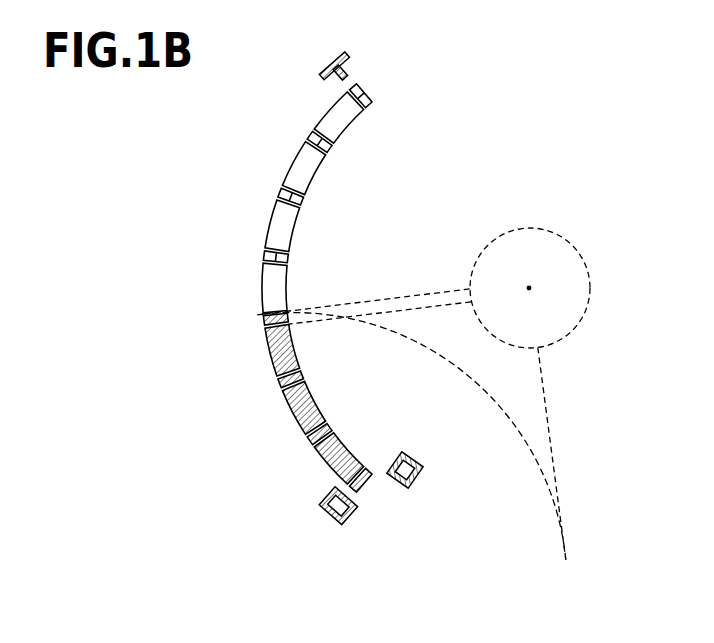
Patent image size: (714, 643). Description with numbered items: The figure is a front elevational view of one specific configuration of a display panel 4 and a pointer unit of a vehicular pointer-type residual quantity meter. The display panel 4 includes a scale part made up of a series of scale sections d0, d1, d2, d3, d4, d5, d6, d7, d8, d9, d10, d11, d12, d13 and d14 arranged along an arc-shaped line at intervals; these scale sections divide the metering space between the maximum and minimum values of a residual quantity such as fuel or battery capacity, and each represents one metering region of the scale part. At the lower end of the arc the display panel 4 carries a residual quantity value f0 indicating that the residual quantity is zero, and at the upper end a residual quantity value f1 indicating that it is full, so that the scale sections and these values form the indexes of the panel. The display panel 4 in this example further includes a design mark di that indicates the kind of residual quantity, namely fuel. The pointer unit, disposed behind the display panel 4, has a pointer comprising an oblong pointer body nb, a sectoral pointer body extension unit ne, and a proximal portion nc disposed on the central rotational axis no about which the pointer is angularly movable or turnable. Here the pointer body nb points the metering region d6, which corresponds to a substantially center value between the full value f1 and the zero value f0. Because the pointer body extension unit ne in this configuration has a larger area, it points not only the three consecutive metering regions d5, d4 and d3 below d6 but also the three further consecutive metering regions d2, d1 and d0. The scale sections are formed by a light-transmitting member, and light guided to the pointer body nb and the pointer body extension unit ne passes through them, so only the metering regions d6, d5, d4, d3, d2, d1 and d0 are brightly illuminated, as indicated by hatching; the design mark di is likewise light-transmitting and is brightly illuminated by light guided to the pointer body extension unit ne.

The display panel 4 is at (500, 98).
The scale section d0 is at (365, 472).
The scale section d1 is at (327, 467).
The scale section d2 is at (332, 428).
The scale section d3 is at (286, 412).
The scale section d4 is at (299, 377).
The scale section d5 is at (268, 350).
The scale section d6 is at (289, 314).
The scale section d7 is at (275, 290).
The scale section d8 is at (288, 258).
The scale section d9 is at (280, 226).
The scale section d10 is at (300, 199).
The scale section d11 is at (302, 168).
The scale section d12 is at (326, 148).
The scale section d13 is at (340, 114).
The scale section d14 is at (366, 102).
The residual quantity value f0 is at (328, 515).
The residual quantity value f1 is at (325, 68).
The design mark di is at (423, 458).
The pointer body nb is at (386, 299).
The proximal portion nc is at (527, 228).
The central axis no is at (529, 290).
The pointer body extension unit ne is at (508, 561).